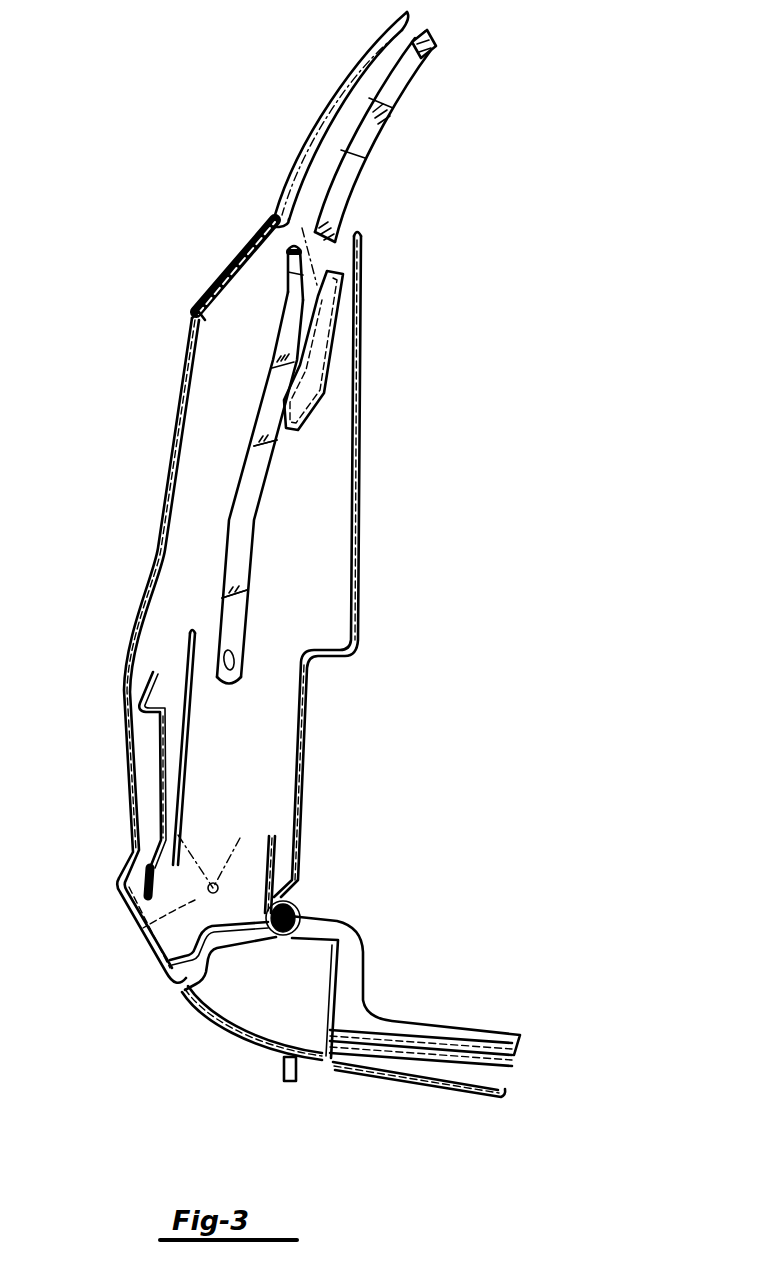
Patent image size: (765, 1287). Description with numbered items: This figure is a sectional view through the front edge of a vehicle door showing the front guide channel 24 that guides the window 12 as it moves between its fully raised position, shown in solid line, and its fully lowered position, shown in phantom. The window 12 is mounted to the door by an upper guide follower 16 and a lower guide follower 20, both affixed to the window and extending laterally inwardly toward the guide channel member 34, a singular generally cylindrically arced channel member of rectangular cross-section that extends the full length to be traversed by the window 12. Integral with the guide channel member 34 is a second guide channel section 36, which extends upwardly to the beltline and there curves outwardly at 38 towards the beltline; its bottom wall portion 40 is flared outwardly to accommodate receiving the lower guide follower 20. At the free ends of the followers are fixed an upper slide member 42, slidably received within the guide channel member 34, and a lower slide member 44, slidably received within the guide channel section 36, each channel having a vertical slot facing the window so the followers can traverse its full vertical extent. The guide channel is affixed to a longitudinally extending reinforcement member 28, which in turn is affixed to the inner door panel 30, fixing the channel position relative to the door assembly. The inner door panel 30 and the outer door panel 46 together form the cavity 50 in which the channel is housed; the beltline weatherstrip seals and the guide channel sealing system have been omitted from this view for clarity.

The window 12 is at (308, 143).
The upper guide follower 16 is at (415, 40).
The lower guide follower 20 is at (288, 255).
The front guide channel 24 is at (260, 571).
The reinforcement member 28 is at (335, 370).
The inner door panel 30 is at (362, 486).
The guide channel member 34 is at (365, 157).
The second guide channel section 36 is at (300, 268).
The outward curve 38 is at (285, 290).
The bottom wall portion 40 is at (273, 445).
The upper slide member 42 is at (411, 62).
The lower slide member 44 is at (290, 265).
The outer door panel 46 is at (157, 522).
The cavity 50 is at (282, 745).